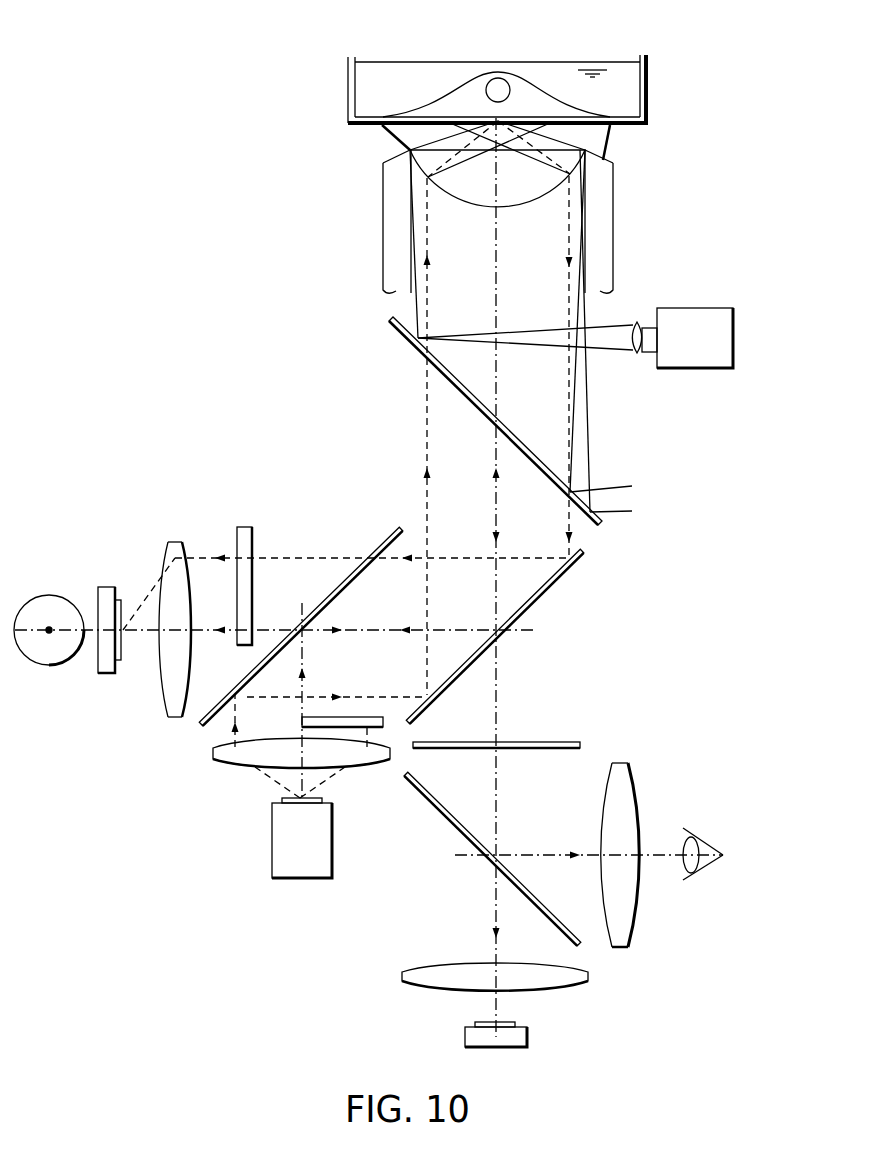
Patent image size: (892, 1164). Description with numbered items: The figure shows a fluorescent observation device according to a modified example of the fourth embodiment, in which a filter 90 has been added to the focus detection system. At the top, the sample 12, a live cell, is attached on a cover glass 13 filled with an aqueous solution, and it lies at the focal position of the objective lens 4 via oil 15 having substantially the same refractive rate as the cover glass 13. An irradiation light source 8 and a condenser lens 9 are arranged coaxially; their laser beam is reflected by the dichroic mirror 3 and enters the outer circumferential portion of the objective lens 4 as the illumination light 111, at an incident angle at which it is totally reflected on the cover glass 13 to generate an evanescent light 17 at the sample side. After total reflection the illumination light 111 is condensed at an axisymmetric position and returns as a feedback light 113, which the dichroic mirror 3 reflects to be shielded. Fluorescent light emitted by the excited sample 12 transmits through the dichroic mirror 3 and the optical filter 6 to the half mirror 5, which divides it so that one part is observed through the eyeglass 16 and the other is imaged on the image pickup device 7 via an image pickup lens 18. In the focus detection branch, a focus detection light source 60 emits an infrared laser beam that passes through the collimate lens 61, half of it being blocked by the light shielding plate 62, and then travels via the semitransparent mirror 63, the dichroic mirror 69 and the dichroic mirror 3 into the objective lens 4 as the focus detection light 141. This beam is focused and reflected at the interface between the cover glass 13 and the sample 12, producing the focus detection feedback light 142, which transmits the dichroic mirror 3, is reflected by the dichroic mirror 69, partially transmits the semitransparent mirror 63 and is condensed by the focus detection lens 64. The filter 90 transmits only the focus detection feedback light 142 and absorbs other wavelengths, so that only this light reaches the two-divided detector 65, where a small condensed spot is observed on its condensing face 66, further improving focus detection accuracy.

The dichroic mirror 3 is at (390, 320).
The objective lens 4 is at (453, 178).
The half mirror 5 is at (440, 812).
The optical filter 6 is at (552, 740).
The image pickup device 7 is at (527, 1037).
The irradiation light source 8 is at (703, 308).
The condenser lens 9 is at (633, 320).
The sample 12 is at (518, 85).
The cover glass 13 is at (648, 97).
The oil 15 is at (407, 137).
The eyeglass 16 is at (628, 930).
The evanescent light 17 is at (483, 115).
The image pickup lens 18 is at (585, 977).
The focus detection light source 60 is at (272, 842).
The collimate lens 61 is at (212, 757).
The light shielding plate 62 is at (360, 717).
The semitransparent mirror 63 is at (383, 540).
The focus detection lens 64 is at (177, 543).
The two-divided detector 65 is at (108, 587).
The condensing face 66 is at (48, 627).
The dichroic mirror for focus detection 69 is at (562, 578).
The filter 90 is at (245, 527).
The illumination light 111 is at (418, 242).
The feedback light 113 is at (580, 240).
The focus detection light 141 is at (492, 447).
The focus detection feedback light 142 is at (497, 377).